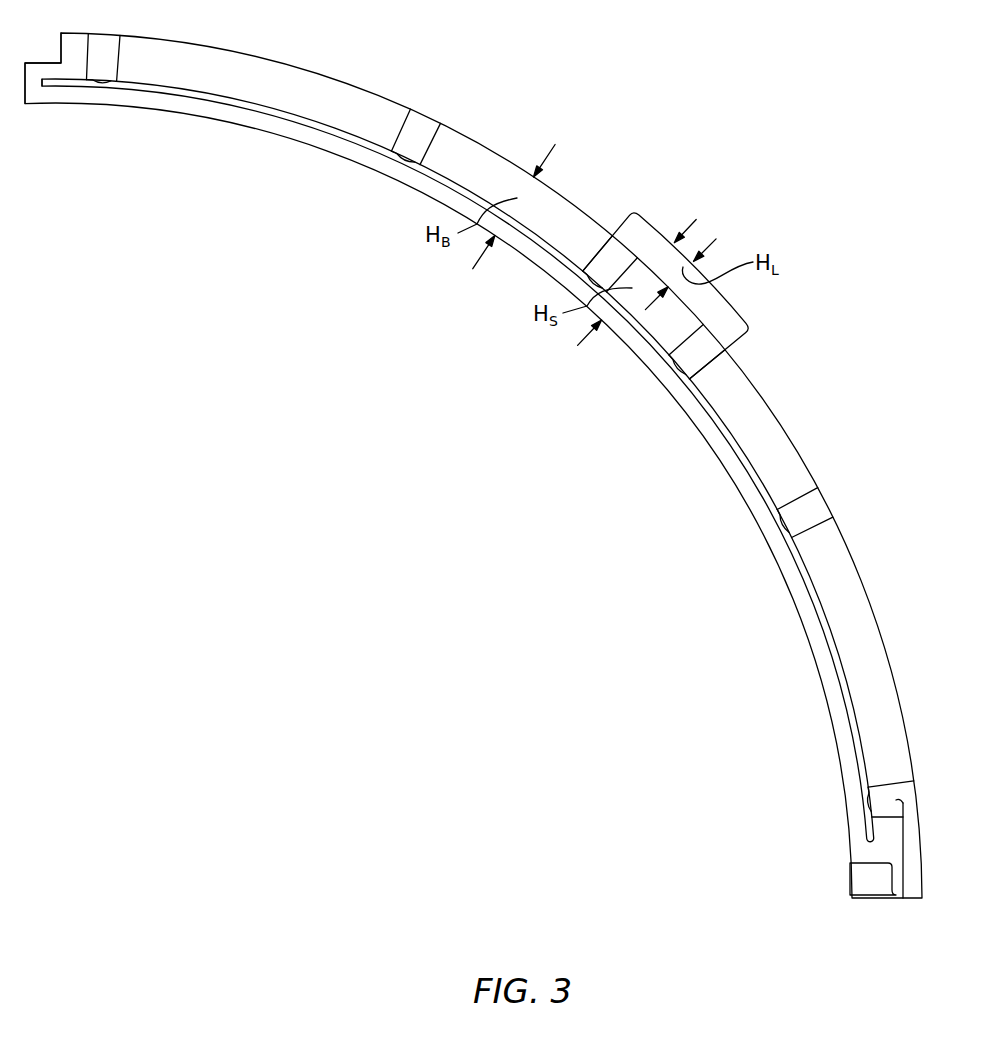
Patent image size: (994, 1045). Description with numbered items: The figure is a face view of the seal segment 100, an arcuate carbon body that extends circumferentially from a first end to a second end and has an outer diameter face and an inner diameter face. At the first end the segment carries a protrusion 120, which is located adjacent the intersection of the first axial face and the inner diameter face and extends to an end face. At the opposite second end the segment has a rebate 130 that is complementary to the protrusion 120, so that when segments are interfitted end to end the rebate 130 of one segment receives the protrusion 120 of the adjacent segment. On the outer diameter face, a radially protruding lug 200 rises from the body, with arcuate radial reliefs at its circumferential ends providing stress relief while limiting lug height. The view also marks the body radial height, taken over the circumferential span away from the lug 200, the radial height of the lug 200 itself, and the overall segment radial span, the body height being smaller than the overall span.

The seal segment 100 is at (640, 142).
The protrusion 120 is at (42, 116).
The rebate 130 is at (868, 877).
The radially protruding lug 200 is at (670, 226).